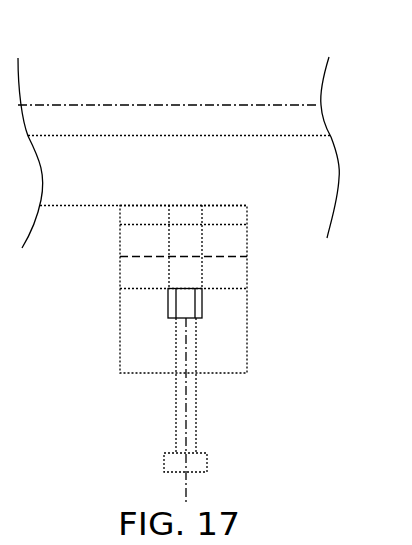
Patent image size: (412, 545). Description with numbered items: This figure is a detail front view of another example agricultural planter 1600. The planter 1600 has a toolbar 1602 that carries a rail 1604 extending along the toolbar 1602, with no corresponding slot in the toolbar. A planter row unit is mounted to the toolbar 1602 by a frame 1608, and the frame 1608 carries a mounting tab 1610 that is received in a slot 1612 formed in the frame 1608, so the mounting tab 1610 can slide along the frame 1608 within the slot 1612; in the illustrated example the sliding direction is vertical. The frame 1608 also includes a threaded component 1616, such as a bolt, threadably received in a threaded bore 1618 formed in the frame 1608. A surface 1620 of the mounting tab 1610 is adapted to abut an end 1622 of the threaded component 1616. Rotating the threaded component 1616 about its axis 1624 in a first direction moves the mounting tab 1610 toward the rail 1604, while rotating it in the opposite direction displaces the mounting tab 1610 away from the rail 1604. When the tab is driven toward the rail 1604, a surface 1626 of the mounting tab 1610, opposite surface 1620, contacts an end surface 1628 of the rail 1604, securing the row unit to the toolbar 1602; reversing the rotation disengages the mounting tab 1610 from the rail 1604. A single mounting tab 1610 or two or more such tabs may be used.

The planter 1600 is at (348, 112).
The toolbar 1602 is at (130, 104).
The rail 1604 is at (180, 136).
The frame 1608 is at (212, 174).
The mounting tab 1610 is at (225, 223).
The surface of the mounting tab 1626 is at (222, 256).
The end surface of the rail 1628 is at (100, 206).
The surface of the mounting tab 1620 is at (236, 289).
The end of the threaded component 1622 is at (183, 288).
The slot 1612 is at (202, 310).
The threaded bore 1618 is at (195, 352).
The threaded component 1616 is at (207, 462).
The axis 1624 is at (185, 487).